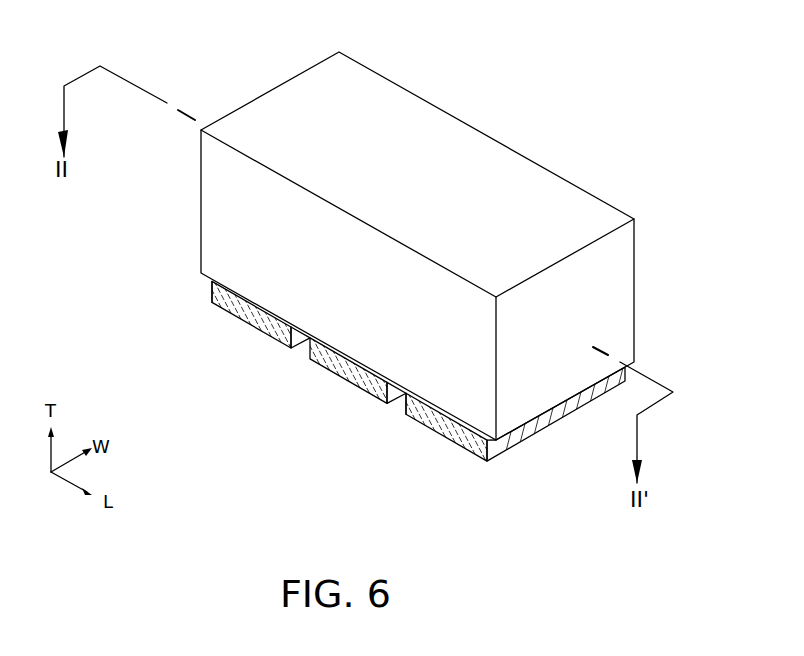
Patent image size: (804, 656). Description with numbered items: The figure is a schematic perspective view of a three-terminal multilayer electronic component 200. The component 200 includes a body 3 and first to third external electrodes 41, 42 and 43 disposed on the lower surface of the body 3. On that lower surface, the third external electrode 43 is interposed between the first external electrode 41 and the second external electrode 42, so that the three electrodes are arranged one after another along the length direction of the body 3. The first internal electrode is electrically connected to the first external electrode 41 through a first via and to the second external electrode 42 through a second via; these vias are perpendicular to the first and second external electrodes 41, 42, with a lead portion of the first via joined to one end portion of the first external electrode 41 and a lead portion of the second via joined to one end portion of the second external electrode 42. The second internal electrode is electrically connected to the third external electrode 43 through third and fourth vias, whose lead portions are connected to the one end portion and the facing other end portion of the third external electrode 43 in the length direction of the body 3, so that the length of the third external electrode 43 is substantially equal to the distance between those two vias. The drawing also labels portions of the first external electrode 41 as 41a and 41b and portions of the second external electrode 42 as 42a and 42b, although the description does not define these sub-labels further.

The three-terminal multilayer electronic component 200 is at (445, 36).
The body 3 is at (477, 150).
The first external electrode 41 is at (262, 312).
The first electrode end portion 41a is at (303, 343).
The first electrode side portion 41b is at (210, 292).
The second external electrode 42 is at (447, 432).
The second electrode side portion 42a is at (407, 403).
The second electrode end portion 42b is at (498, 466).
The third external electrode 43 is at (345, 372).